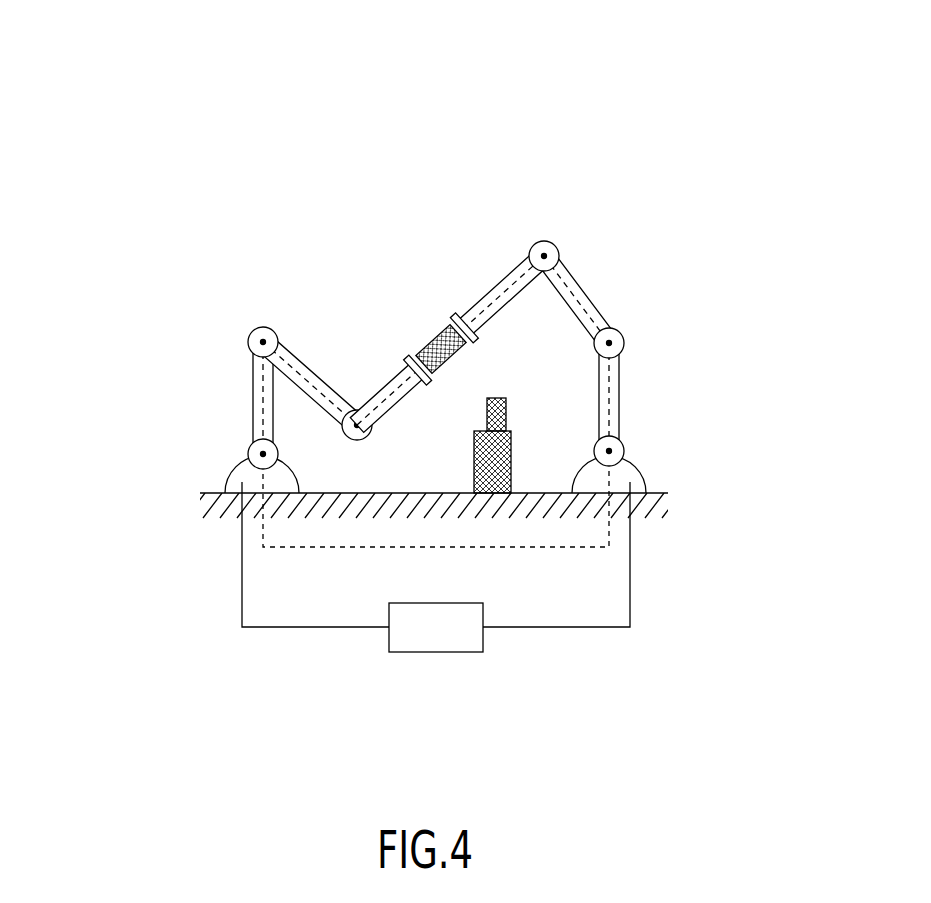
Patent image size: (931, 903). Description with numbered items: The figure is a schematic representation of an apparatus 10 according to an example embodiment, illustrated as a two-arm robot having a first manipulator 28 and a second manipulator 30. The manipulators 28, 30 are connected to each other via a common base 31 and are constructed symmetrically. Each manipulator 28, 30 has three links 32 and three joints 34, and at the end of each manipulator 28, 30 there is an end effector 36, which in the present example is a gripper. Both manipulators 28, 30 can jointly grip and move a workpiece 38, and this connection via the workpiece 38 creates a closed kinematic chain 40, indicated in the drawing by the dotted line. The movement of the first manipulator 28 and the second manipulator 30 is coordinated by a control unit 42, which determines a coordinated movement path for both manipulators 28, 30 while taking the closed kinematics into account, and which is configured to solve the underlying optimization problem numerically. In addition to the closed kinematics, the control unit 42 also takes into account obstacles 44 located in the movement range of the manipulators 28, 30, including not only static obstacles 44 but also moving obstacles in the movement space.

The apparatus 10 is at (414, 133).
The first manipulator 28 is at (243, 344).
The second manipulator 30 is at (647, 298).
The common base 31 is at (247, 472).
The link 32 is at (253, 397).
The joint 34 is at (277, 330).
The end effector 36 is at (450, 296).
The workpiece 38 is at (430, 334).
The closed kinematic chain 40 is at (590, 306).
The control unit 42 is at (470, 653).
The obstacle 44 is at (511, 440).